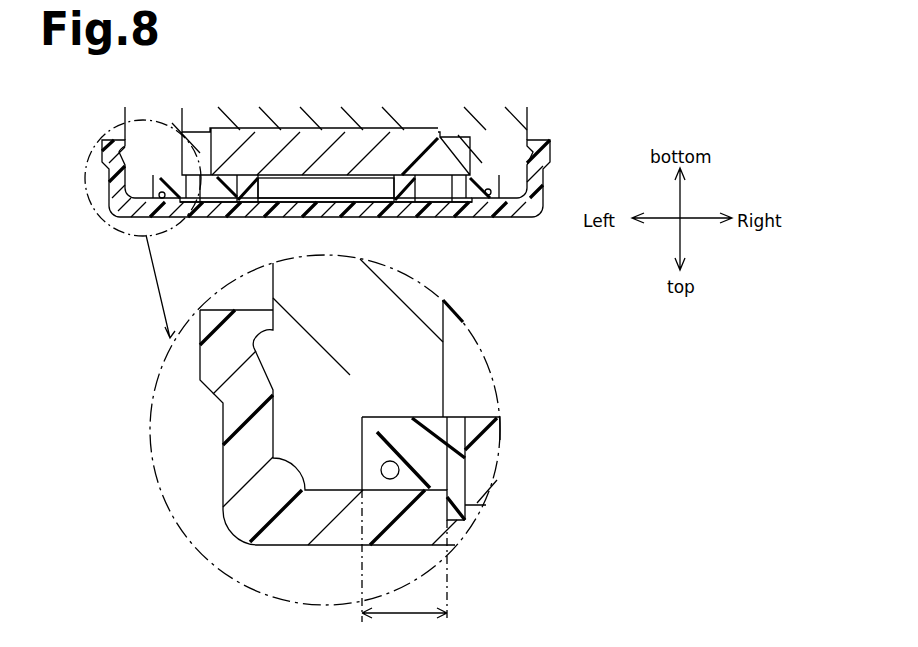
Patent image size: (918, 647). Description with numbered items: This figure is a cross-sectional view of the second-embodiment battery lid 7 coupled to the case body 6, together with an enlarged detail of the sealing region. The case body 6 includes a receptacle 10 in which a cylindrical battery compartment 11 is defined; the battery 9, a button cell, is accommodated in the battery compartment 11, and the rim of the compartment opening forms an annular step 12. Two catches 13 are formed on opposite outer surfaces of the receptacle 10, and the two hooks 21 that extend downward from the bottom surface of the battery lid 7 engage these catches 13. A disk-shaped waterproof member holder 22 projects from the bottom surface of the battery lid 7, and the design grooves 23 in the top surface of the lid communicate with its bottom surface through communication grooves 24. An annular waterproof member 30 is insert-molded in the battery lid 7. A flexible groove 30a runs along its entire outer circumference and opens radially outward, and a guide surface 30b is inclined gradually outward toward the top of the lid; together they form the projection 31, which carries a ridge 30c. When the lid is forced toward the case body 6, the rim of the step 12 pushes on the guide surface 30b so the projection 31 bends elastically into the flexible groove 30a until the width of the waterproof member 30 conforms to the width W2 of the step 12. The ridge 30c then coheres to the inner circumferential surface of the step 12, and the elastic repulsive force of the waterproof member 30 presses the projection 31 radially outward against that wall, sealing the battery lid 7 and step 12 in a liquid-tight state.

The case body 6 is at (487, 107).
The battery lid 7 is at (533, 240).
The battery 9 is at (333, 128).
The receptacle 10 is at (140, 118).
The battery compartment 11 is at (395, 130).
The step 12 is at (183, 130).
The catch 13 is at (119, 150).
The hook 21 is at (100, 165).
The waterproof member holder 22 is at (476, 180).
The design groove 23 is at (410, 210).
The communication groove 24 is at (448, 205).
The waterproof member 30 is at (152, 175).
The flexible groove 30a is at (383, 477).
The guide surface 30b is at (393, 417).
The ridge 30c is at (362, 492).
The projection 31 is at (362, 450).
The width of the step W2 is at (404, 556).